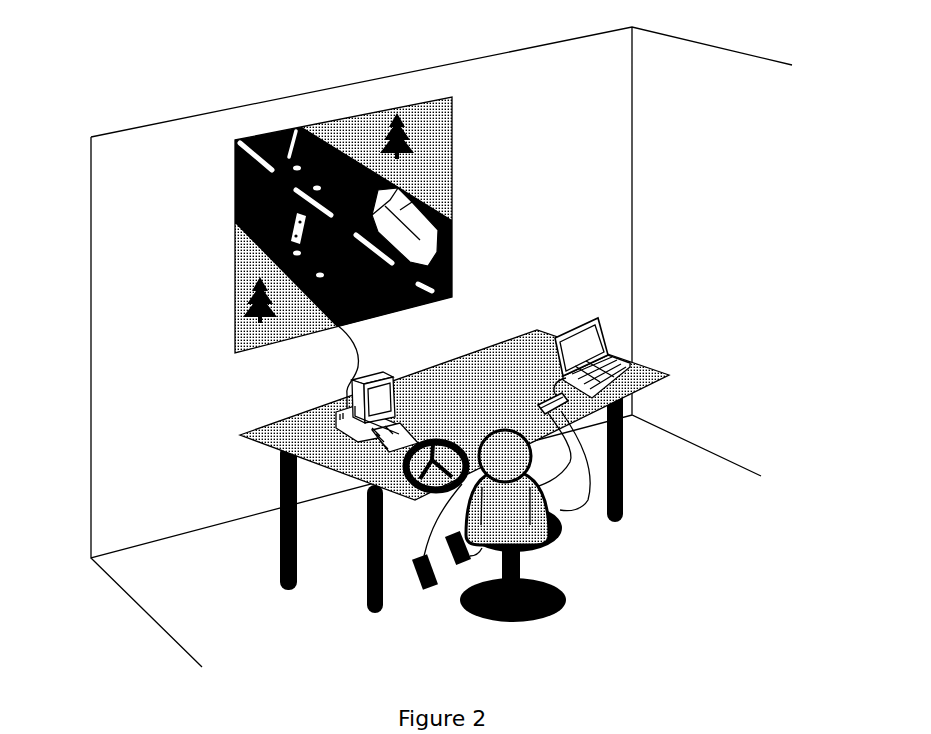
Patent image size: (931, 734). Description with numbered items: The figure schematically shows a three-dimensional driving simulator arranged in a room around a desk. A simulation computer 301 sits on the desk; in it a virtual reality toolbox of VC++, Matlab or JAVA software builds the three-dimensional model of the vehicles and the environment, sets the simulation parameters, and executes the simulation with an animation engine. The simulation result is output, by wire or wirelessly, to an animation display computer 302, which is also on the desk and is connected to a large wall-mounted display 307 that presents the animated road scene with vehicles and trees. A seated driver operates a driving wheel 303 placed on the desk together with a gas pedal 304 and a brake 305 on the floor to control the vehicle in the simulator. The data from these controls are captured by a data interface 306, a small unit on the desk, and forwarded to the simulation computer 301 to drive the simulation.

The 3D simulation computer 301 is at (598, 317).
The animation display computer 302 is at (372, 373).
The driving wheel 303 is at (452, 442).
The gas pedal 304 is at (457, 565).
The brake 305 is at (415, 575).
The data interface 306 is at (539, 404).
The display screen 307 is at (450, 175).